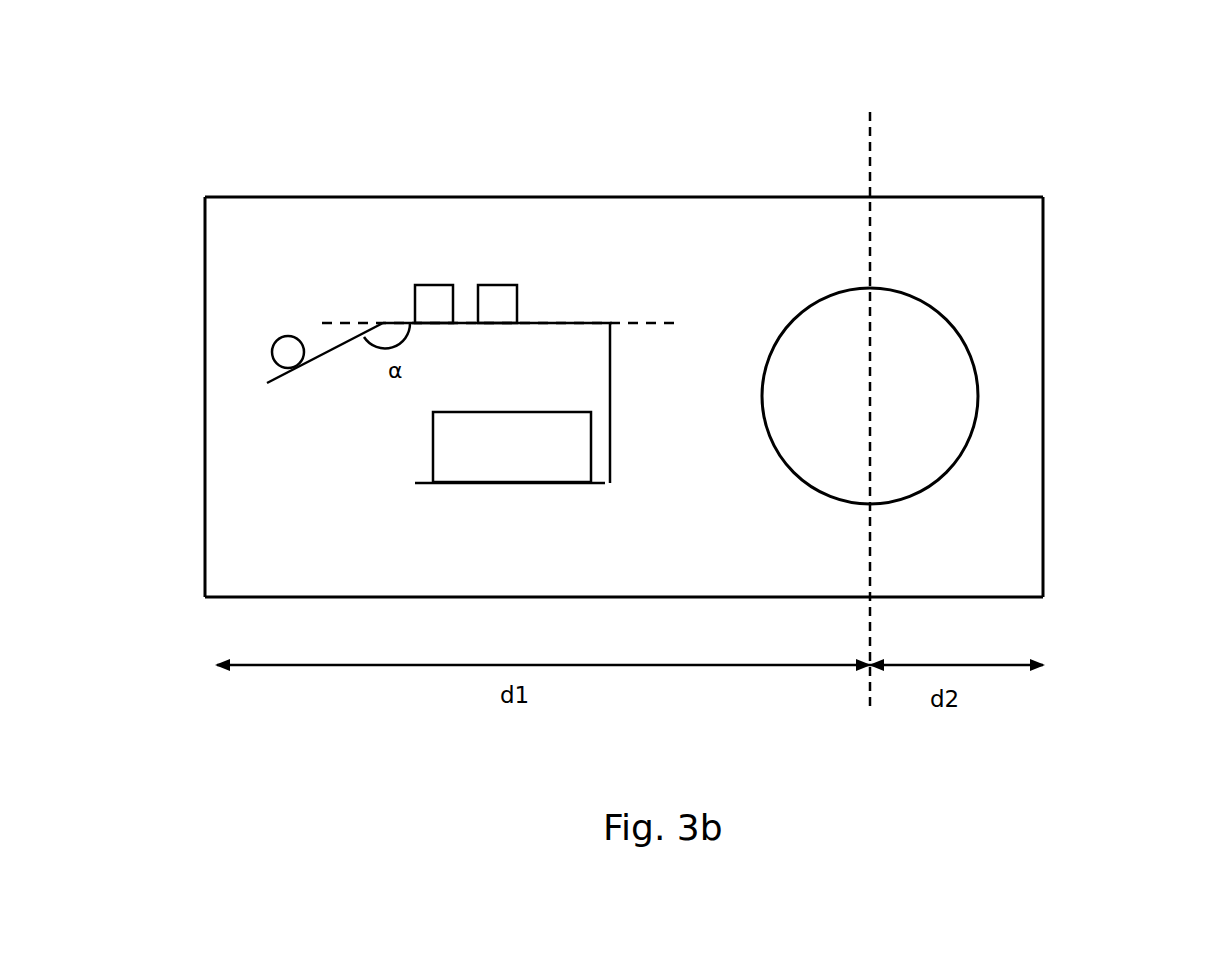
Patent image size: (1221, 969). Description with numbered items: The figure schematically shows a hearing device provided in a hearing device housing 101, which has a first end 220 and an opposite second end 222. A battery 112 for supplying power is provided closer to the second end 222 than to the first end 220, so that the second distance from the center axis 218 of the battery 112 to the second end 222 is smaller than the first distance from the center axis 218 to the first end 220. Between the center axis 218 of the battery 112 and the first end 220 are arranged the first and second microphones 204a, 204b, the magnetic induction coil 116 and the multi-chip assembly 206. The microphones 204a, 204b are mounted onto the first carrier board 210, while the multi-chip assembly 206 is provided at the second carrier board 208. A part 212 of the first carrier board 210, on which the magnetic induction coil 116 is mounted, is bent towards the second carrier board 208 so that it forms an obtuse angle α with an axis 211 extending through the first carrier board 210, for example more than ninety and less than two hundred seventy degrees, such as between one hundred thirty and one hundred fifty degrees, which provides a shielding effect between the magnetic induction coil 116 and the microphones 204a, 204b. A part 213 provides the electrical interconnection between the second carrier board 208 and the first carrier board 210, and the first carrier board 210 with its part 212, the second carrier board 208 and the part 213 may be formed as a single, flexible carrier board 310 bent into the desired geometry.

The hearing device housing 101 is at (925, 197).
The battery 112 is at (983, 400).
The magnetic induction coil 116 is at (291, 337).
The first microphone 204a is at (432, 285).
The second microphone 204b is at (500, 285).
The multi-chip assembly 206 is at (432, 440).
The second carrier board 208 is at (422, 485).
The first carrier board 210 is at (570, 323).
The axis 211 is at (657, 323).
The part of the first carrier board 212 is at (327, 352).
The part providing the electrical interconnection 213 is at (610, 402).
The center axis of the battery 218 is at (873, 142).
The first end 220 is at (207, 520).
The second end 222 is at (1043, 523).
The single carrier board 310 is at (615, 355).